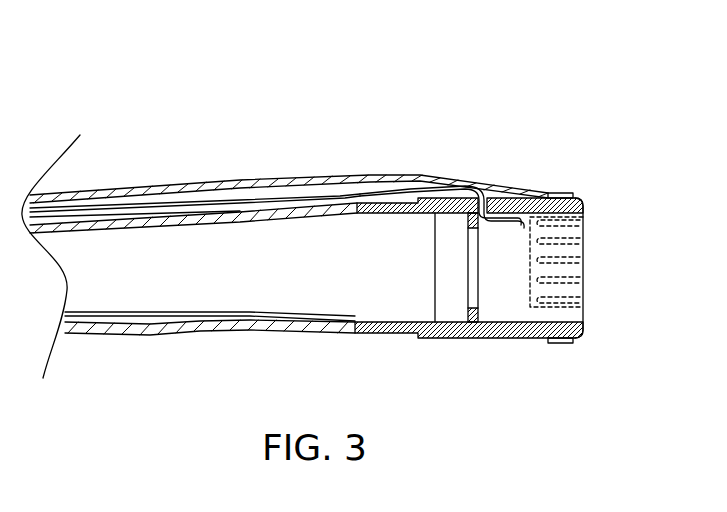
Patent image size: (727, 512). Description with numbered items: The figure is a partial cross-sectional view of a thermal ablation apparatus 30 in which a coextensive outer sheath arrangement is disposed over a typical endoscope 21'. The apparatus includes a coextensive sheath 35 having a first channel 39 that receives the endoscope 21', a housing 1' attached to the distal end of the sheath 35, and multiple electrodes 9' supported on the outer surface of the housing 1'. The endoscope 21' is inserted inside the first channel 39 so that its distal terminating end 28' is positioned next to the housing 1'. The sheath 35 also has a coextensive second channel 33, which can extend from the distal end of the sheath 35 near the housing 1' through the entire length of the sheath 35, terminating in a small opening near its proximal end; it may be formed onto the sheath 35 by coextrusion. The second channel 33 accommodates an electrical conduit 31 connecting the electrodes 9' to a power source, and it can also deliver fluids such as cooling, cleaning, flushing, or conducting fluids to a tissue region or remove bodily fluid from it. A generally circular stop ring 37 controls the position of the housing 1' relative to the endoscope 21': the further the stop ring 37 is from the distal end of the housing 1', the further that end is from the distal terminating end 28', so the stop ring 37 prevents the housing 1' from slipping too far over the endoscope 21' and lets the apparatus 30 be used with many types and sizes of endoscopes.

The thermal ablation apparatus 30 is at (560, 58).
The electrical conduit 31 is at (337, 196).
The second channel 33 is at (413, 183).
The housing 1' is at (469, 285).
The electrodes 9' is at (582, 246).
The distal terminating end 28' is at (448, 296).
The stop ring 37 is at (466, 322).
The endoscope 21' is at (210, 342).
The first channel 39 is at (250, 318).
The coextensive sheath 35 is at (305, 331).